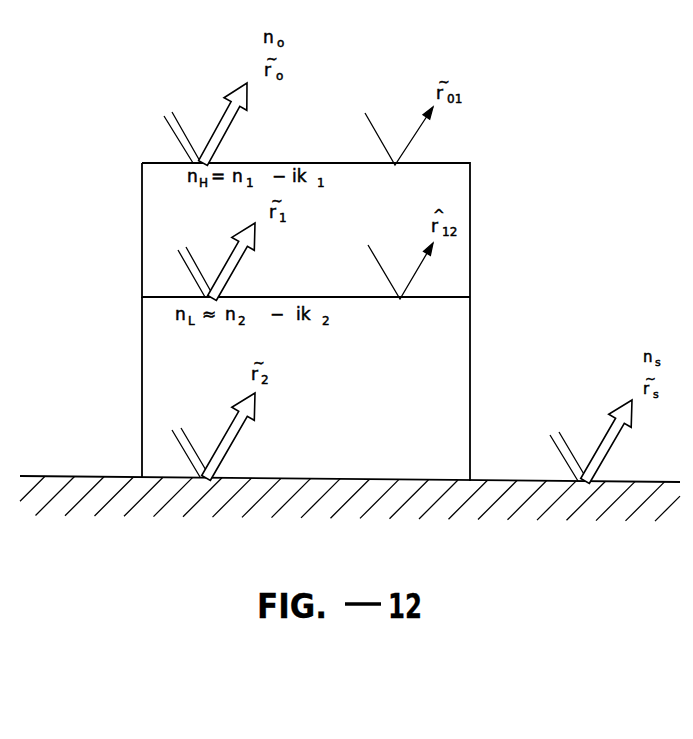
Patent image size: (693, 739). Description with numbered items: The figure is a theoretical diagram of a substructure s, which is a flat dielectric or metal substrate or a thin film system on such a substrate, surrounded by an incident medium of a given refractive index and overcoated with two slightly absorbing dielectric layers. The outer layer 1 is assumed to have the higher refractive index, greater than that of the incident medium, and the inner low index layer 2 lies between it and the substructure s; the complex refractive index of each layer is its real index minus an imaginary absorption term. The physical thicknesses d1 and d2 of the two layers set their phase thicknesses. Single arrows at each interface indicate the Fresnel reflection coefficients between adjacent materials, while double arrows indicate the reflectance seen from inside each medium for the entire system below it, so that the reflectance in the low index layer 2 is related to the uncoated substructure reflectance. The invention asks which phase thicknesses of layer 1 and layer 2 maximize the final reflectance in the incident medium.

The outer layer 1 is at (306, 389).
The low index layer 2 is at (306, 232).
The substructure s is at (350, 513).
The thickness of outer layer d1 is at (92, 285).
The thickness of low index layer d2 is at (92, 465).